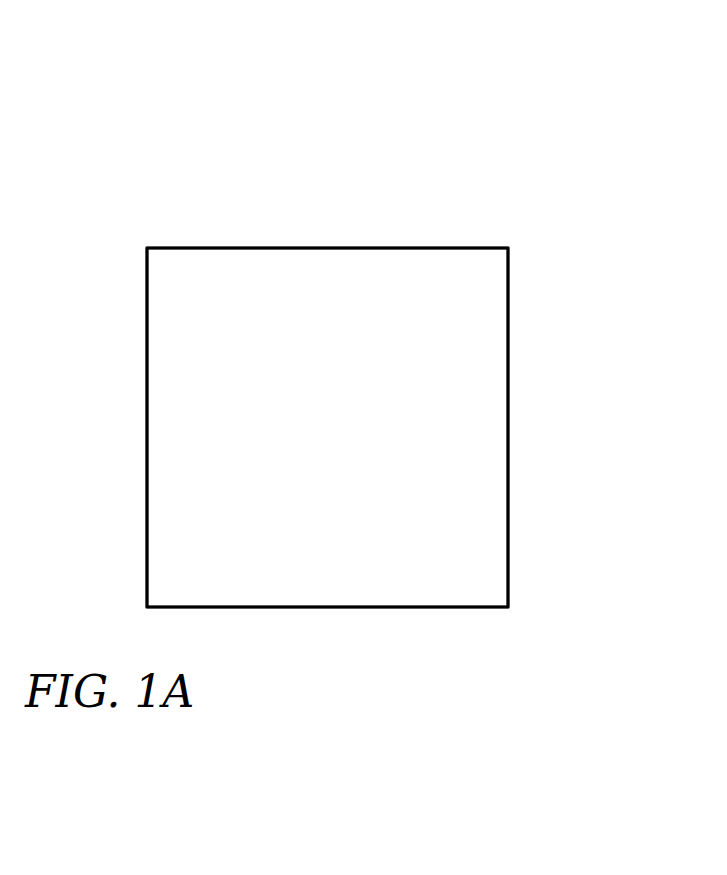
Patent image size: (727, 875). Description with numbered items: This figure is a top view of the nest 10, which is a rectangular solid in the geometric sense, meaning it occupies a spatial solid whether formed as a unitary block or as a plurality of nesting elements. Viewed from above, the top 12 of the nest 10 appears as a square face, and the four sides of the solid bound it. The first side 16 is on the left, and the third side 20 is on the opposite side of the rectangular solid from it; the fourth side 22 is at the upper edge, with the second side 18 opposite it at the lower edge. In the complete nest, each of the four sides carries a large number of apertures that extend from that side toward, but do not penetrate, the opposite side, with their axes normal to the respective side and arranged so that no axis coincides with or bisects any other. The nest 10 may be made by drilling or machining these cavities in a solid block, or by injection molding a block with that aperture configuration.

The nest 10 is at (147, 191).
The top 12 is at (343, 352).
The first side 16 is at (146, 418).
The second side 18 is at (317, 611).
The third side 20 is at (510, 438).
The fourth side 22 is at (340, 247).